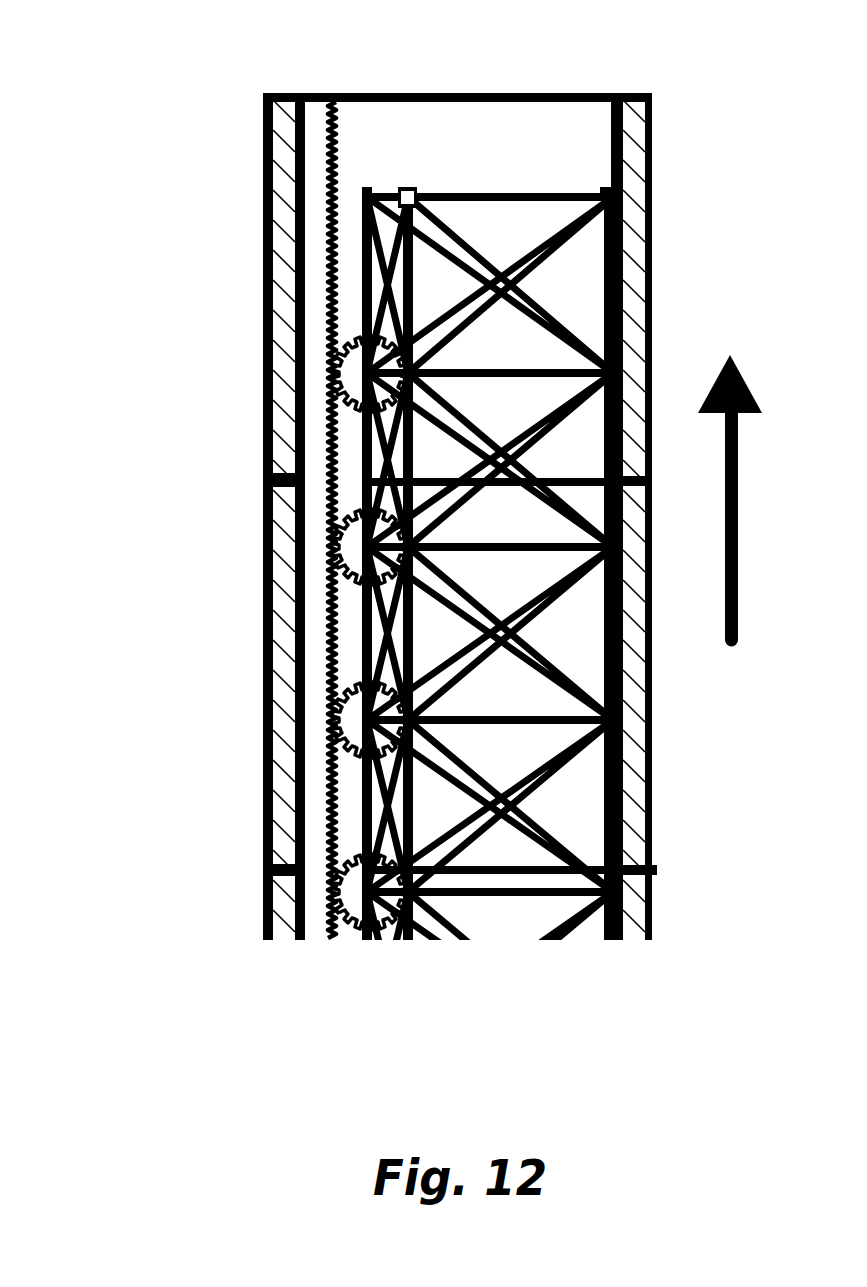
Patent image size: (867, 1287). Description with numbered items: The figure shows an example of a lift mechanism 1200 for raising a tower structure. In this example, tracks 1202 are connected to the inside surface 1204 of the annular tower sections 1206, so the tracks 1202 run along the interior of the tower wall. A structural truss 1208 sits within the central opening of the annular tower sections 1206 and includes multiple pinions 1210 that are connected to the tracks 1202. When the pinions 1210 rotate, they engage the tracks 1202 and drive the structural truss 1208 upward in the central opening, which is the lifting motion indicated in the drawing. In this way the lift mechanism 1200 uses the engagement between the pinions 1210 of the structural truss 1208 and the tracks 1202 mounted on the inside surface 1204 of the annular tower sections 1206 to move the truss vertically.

The lift mechanism 1200 is at (124, 114).
The tracks 1202 is at (313, 427).
The inside surface 1204 is at (611, 145).
The annular tower sections 1206 is at (287, 108).
The structural truss 1208 is at (444, 193).
The pinions 1210 is at (345, 373).